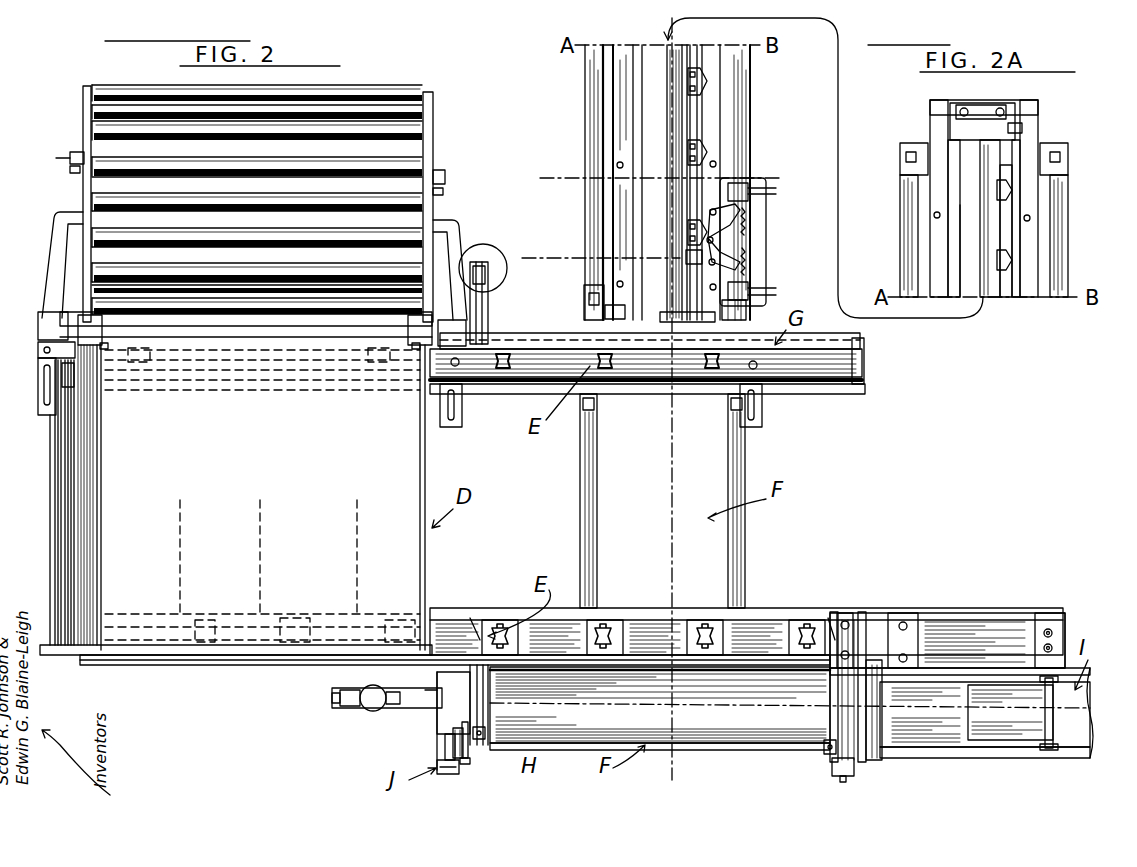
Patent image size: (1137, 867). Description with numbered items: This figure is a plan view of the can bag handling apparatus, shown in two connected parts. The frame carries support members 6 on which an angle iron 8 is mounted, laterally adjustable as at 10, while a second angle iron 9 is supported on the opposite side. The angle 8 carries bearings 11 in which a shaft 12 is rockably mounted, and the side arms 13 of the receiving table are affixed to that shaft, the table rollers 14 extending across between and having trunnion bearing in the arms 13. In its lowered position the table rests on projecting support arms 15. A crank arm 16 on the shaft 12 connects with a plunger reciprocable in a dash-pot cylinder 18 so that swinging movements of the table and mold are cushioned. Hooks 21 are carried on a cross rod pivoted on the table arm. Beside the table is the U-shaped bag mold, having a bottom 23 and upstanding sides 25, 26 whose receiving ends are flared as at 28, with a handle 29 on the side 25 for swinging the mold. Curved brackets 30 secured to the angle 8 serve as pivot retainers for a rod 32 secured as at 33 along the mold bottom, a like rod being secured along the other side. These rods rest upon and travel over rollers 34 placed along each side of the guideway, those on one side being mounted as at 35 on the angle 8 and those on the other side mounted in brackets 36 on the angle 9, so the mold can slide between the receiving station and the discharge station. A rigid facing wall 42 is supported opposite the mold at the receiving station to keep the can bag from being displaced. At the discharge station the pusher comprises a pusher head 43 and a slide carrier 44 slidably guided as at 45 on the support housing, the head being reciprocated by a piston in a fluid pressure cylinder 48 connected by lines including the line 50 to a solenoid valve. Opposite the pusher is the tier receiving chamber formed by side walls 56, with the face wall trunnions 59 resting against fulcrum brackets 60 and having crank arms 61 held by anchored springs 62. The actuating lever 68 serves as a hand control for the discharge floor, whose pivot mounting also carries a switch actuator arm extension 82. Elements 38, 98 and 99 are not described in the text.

In FIG. 2, the support members 6 is at (40, 394).
In FIG. 2, the angle iron 8 is at (690, 370).
In FIG. 2, the angle iron 9 is at (748, 650).
In FIG. 2, the lateral adjustment mounting 10 is at (45, 380).
In FIG. 2, the bearings 11 is at (60, 320).
In FIG. 2, the shaft 12 is at (522, 258).
In FIG. 2, the side arms 13 is at (83, 240).
In FIG. 2, the rollers 14 is at (174, 245).
In FIG. 2, the projecting support arms 15 is at (56, 218).
In FIG. 2, the crank arm 16 is at (486, 310).
In FIG. 2, the dash-pot cylinder 18 is at (490, 258).
In FIG. 2, the hooks 21 is at (70, 154).
In FIG. 2, the bottom 23 is at (426, 480).
In FIG. 2, the side 25 is at (75, 482).
In FIG. 2, the side 26 is at (420, 509).
In FIG. 2, the flared receiving ends 28 is at (88, 348).
In FIG. 2, the handle 29 is at (52, 520).
In FIG. 2, the curved brackets 30 is at (135, 352).
In FIG. 2, the rod 32 is at (42, 330).
In FIG. 2, the rod securement 33 is at (9, 428).
In FIG. 2, the rollers 34 is at (500, 368).
In FIG. 2, the roller mounting 35 is at (830, 387).
In FIG. 2, the brackets 36 is at (478, 620).
In FIG. 2, the plate 38 is at (40, 350).
In FIG. 2, the rigid facing wall 42 is at (235, 660).
In FIG. 2, the pusher head 43 is at (546, 348).
In FIG. 2, the slide carrier 44 is at (633, 140).
In FIG. 2, the slide guide 45 is at (620, 104).
In FIG. 2A, the fluid pressure cylinder 48 is at (975, 134).
In FIG. 2A, the pressure and exhaust line 50 is at (1022, 128).
In FIG. 2, the side walls 56 is at (595, 712).
In FIG. 2, the trunnions 59 is at (800, 752).
In FIG. 2, the fulcrum brackets 60 is at (480, 742).
In FIG. 2, the crank arms 61 is at (467, 760).
In FIG. 2, the anchored springs 62 is at (452, 740).
In FIG. 2, the actuating lever 68 is at (445, 774).
In FIG. 2, the switch actuator arm extension 82 is at (400, 706).
In FIG. 2, the motor 98 is at (392, 695).
In FIG. 2, the coupling 99 is at (342, 694).